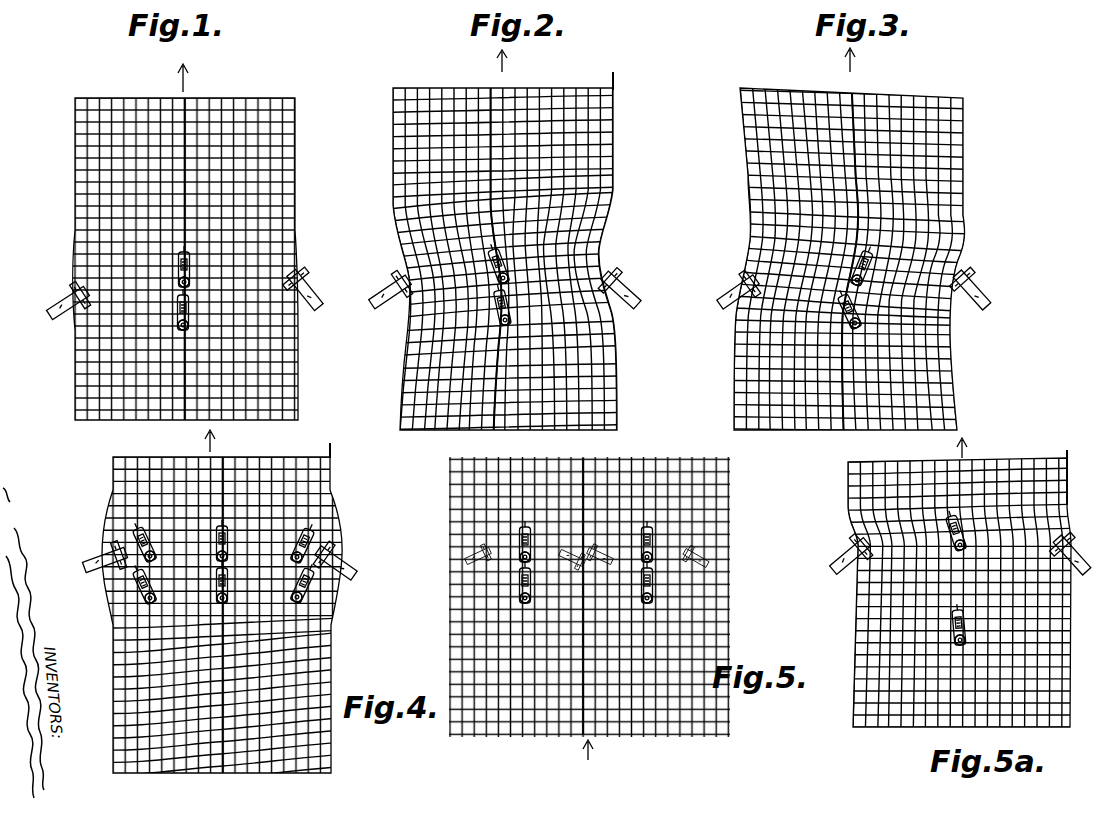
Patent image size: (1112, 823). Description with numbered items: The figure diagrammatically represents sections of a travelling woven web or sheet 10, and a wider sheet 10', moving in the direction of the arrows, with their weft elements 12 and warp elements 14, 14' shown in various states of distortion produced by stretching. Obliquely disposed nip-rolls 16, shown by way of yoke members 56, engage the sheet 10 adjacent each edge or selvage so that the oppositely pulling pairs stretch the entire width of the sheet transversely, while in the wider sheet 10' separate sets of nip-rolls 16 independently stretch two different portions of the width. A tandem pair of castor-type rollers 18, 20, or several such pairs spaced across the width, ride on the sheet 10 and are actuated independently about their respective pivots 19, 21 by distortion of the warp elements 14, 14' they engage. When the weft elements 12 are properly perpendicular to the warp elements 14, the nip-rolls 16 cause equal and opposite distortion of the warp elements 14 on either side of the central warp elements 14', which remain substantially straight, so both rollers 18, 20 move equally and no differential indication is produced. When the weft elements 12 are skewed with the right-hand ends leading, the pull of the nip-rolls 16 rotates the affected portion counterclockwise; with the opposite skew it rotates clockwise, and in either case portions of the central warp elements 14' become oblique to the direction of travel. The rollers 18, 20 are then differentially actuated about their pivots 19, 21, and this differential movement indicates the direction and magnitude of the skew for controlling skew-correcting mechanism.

In FIG. 1, the woven web or sheet 10 is at (201, 259).
In FIG. 2, the woven web or sheet 10 is at (520, 251).
In FIG. 3, the woven web or sheet 10 is at (868, 259).
In FIG. 4, the woven web or sheet 10 is at (201, 608).
In FIG. 5A, the woven web or sheet 10 is at (940, 588).
In FIG. 5, the wider woven sheet 10' is at (586, 619).
In FIG. 1, the weft elements 12 is at (78, 172).
In FIG. 2, the weft elements 12 is at (403, 156).
In FIG. 3, the weft elements 12 is at (762, 160).
In FIG. 4, the weft elements 12 is at (305, 495).
In FIG. 5, the weft elements 12 is at (680, 496).
In FIG. 5A, the weft elements 12 is at (960, 591).
In FIG. 1, the warp elements 14 is at (185, 245).
In FIG. 2, the warp elements 14 is at (505, 244).
In FIG. 3, the warp elements 14 is at (849, 245).
In FIG. 4, the warp elements 14 is at (233, 611).
In FIG. 5, the warp elements 14 is at (589, 579).
In FIG. 5A, the warp elements 14 is at (961, 593).
In FIG. 2, the central warp elements 14' is at (481, 242).
In FIG. 3, the central warp elements 14' is at (870, 245).
In FIG. 4, the central warp elements 14' is at (238, 603).
In FIG. 5, the central warp elements 14' is at (602, 583).
In FIG. 1, the nip-rolls 16 is at (72, 282).
In FIG. 2, the nip-rolls 16 is at (394, 284).
In FIG. 3, the nip-rolls 16 is at (742, 276).
In FIG. 4, the nip-rolls 16 is at (126, 568).
In FIG. 5, the nip-rolls 16 is at (478, 556).
In FIG. 5A, the nip-rolls 16 is at (846, 548).
In FIG. 1, the castor-type roller 18 is at (188, 258).
In FIG. 2, the castor-type roller 18 is at (503, 258).
In FIG. 3, the castor-type roller 18 is at (868, 255).
In FIG. 4, the castor-type roller 18 is at (135, 530).
In FIG. 5, the castor-type roller 18 is at (522, 538).
In FIG. 5A, the castor-type roller 18 is at (955, 518).
In FIG. 1, the pivot 19 is at (190, 282).
In FIG. 2, the pivot 19 is at (500, 280).
In FIG. 3, the pivot 19 is at (870, 278).
In FIG. 4, the pivot 19 is at (140, 532).
In FIG. 5, the pivot 19 is at (520, 556).
In FIG. 5A, the pivot 19 is at (965, 540).
In FIG. 1, the castor-type roller 20 is at (180, 298).
In FIG. 2, the castor-type roller 20 is at (515, 298).
In FIG. 3, the castor-type roller 20 is at (850, 300).
In FIG. 4, the castor-type roller 20 is at (145, 588).
In FIG. 5, the castor-type roller 20 is at (518, 580).
In FIG. 5A, the castor-type roller 20 is at (955, 598).
In FIG. 1, the pivot 21 is at (182, 330).
In FIG. 2, the pivot 21 is at (507, 326).
In FIG. 3, the pivot 21 is at (850, 326).
In FIG. 4, the pivot 21 is at (155, 620).
In FIG. 5, the pivot 21 is at (520, 605).
In FIG. 5A, the pivot 21 is at (956, 640).
In FIG. 1, the yoke member 56 is at (54, 310).
In FIG. 2, the yoke member 56 is at (382, 302).
In FIG. 3, the yoke member 56 is at (722, 300).
In FIG. 4, the yoke member 56 is at (98, 562).